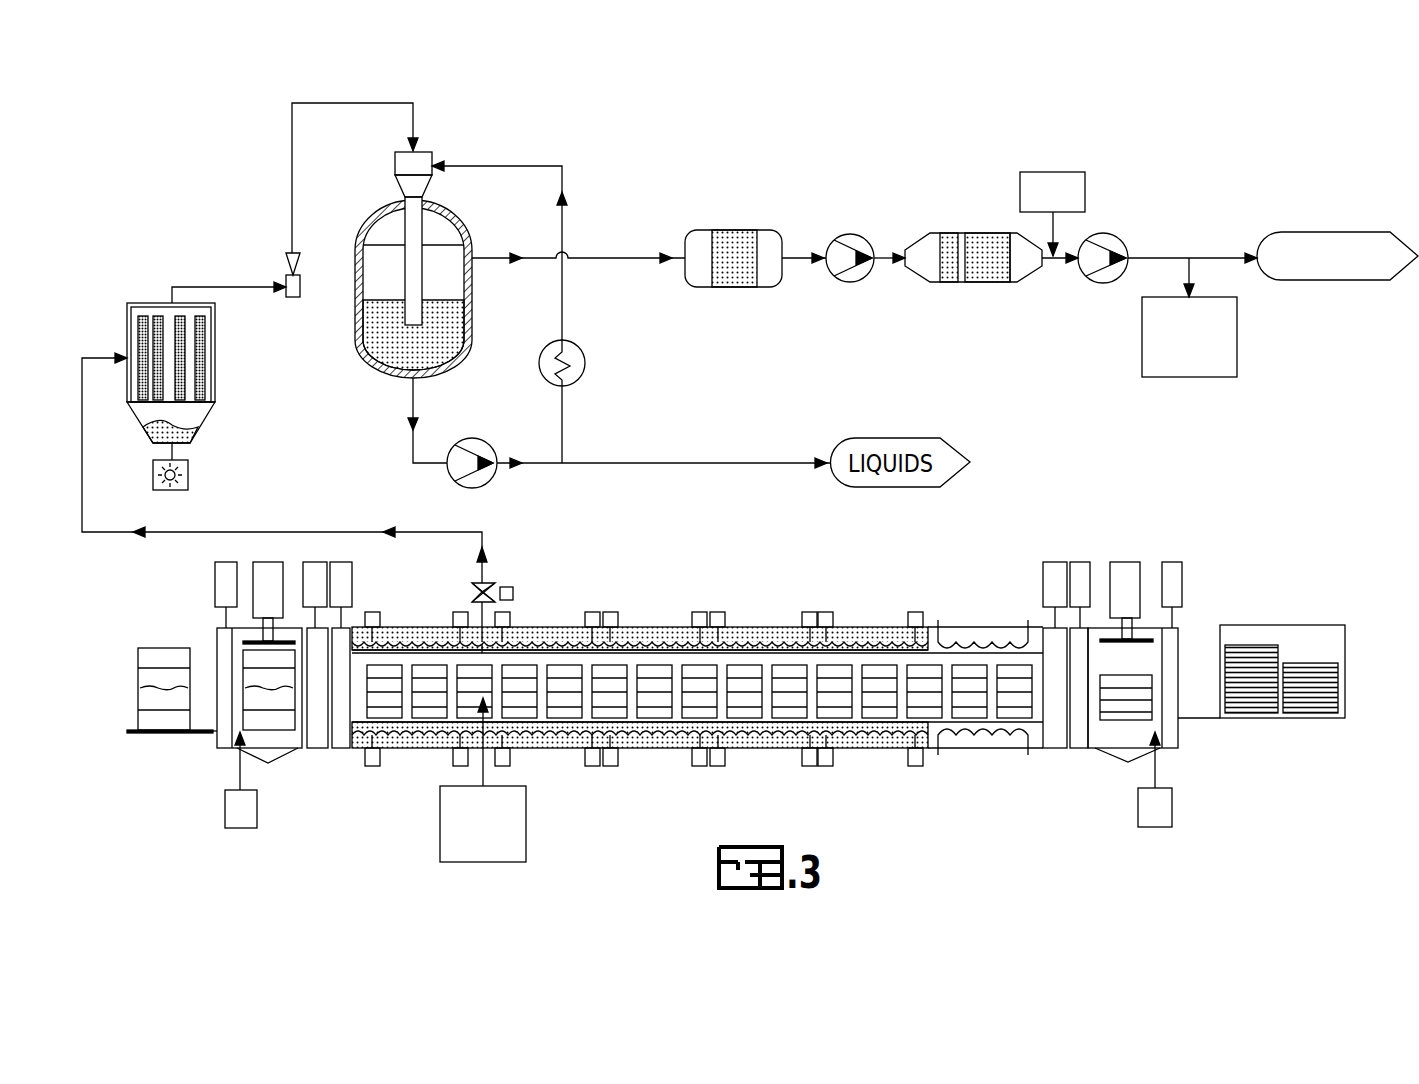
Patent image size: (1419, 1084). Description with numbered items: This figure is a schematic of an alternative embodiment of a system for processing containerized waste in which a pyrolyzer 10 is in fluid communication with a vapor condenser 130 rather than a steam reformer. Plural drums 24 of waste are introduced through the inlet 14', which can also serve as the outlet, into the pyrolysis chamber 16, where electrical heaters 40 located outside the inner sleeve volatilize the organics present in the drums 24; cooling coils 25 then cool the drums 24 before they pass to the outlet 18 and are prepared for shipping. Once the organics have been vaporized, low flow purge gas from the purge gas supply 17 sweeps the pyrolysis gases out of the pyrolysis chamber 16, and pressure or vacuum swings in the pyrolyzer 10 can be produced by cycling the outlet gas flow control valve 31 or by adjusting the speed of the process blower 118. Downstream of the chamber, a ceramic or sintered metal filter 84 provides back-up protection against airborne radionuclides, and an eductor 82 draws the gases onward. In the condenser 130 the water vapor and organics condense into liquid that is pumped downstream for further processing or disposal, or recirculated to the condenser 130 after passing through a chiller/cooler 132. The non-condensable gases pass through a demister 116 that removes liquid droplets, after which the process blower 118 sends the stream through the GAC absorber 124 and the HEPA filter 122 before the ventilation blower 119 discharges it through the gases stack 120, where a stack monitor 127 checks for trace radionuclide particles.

The pyrolyzer 10 is at (650, 787).
The inlet 14' is at (286, 695).
The pyrolysis chamber 16 is at (697, 705).
The purge gas supply 17 is at (510, 862).
The gas outlet 18 is at (1090, 760).
The drums 24 is at (150, 695).
The cooling coils 25 is at (980, 738).
The pressure cycle valve 31 is at (471, 592).
The electrical heaters 40 is at (410, 746).
The eductor 82 is at (284, 258).
The ceramic or sintered metal filter 84 is at (134, 304).
The demister 116 is at (720, 230).
The process blower 118 is at (838, 242).
The ventilation blower 119 is at (1120, 240).
The gases stack 120 is at (1264, 233).
The HEPA filter 122 is at (958, 233).
The granulated activated carbon (GAC) absorber 124 is at (1019, 192).
The stack monitor 127 is at (1239, 318).
The condenser 130 is at (362, 222).
The chiller/cooler 132 is at (577, 380).